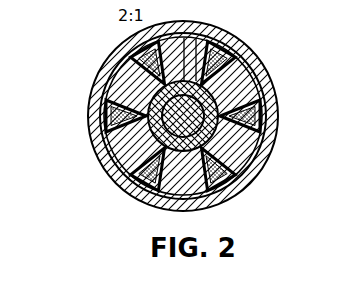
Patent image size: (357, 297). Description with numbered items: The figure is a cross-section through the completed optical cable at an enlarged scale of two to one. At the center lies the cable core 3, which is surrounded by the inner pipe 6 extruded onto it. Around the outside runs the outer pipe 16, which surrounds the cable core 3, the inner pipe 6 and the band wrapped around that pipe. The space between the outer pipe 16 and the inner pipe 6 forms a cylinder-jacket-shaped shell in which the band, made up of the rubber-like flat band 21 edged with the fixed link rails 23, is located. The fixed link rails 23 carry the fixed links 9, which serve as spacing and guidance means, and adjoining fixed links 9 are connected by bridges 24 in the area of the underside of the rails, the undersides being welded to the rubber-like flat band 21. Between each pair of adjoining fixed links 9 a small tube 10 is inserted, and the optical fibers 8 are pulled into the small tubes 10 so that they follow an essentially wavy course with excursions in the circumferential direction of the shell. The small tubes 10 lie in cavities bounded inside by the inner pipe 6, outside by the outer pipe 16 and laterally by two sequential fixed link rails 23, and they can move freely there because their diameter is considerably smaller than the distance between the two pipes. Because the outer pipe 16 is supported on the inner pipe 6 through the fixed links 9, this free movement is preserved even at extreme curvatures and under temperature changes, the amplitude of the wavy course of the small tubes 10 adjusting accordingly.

The cable core 3 is at (190, 108).
The inner pipe 6 is at (121, 56).
The optical fibers 8 is at (97, 97).
The fixed links 9 is at (132, 82).
The small tubes 10 is at (95, 137).
The outer pipe 16 is at (126, 190).
The rubber-like flat band 21 is at (110, 176).
The fixed link rails 23 is at (192, 54).
The bridges 24 is at (107, 113).